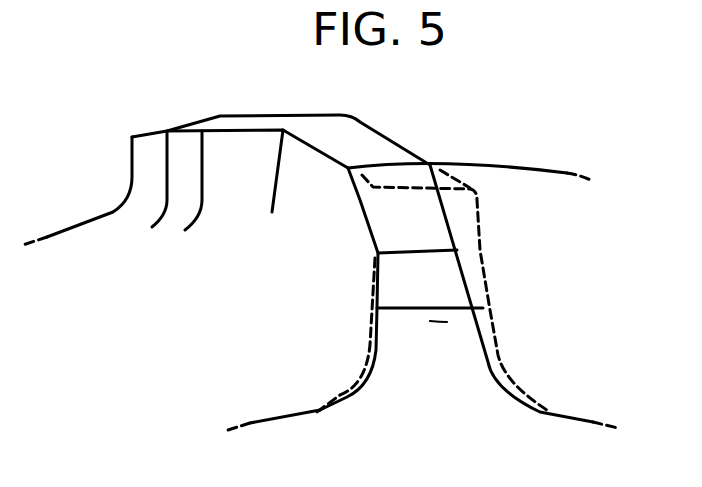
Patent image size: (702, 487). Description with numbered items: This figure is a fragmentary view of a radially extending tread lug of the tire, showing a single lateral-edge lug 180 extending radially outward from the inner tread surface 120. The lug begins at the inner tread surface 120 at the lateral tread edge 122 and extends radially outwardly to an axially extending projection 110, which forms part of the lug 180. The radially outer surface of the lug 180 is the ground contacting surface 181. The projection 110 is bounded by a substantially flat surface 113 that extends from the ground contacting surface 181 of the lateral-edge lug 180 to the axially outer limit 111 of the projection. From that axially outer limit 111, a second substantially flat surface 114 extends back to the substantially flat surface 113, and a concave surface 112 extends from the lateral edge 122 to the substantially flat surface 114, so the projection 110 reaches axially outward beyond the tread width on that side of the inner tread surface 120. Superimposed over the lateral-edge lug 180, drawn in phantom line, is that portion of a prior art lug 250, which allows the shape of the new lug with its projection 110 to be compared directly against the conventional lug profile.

The lateral-edge lug 180 is at (367, 128).
The ground contacting surface 181 is at (318, 127).
The inner tread surface 120 is at (128, 238).
The substantially flat surface 113 is at (413, 180).
The prior art lug 250 is at (480, 208).
The axially extending projection 110 is at (462, 257).
The substantially flat surface 114 is at (450, 277).
The axially outer limit 111 is at (462, 308).
The concave surface 112 is at (447, 322).
The lateral edge 122 is at (282, 413).